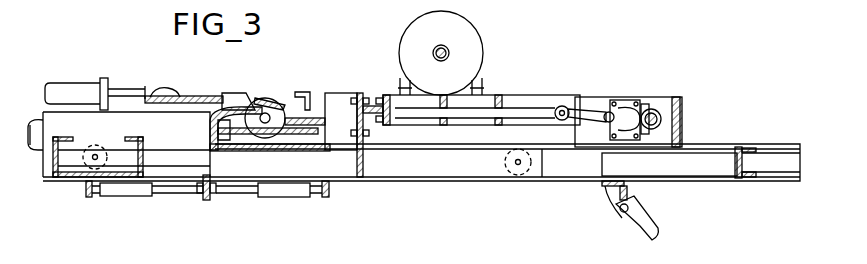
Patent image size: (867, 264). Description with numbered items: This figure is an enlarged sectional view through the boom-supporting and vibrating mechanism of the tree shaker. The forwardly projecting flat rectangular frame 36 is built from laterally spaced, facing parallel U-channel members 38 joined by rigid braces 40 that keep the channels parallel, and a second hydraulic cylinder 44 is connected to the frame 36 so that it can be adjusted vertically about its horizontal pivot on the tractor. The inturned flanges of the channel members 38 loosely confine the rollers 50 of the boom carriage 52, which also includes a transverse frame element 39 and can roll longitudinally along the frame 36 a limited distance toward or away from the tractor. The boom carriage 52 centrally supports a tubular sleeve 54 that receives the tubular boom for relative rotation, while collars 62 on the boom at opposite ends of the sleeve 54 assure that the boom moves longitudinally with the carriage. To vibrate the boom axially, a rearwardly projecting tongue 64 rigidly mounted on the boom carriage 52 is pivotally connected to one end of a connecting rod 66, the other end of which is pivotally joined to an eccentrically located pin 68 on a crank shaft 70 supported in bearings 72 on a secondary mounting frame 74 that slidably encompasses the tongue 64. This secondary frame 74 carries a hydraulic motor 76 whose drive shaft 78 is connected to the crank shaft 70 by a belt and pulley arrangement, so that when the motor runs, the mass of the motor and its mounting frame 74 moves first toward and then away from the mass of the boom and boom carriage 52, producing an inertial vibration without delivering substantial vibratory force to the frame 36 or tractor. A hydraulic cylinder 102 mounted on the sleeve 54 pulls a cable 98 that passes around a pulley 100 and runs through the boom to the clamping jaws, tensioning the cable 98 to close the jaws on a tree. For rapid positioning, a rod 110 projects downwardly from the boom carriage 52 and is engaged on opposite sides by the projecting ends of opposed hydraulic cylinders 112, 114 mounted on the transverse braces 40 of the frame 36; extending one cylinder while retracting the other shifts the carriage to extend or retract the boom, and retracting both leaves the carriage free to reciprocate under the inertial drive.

The frame 36 is at (468, 181).
The U-channel members 38 is at (770, 150).
The transverse frame element 39 is at (208, 153).
The rigid braces 40 is at (89, 197).
The second hydraulic cylinder 44 is at (641, 226).
The rollers 50 is at (108, 190).
The boom carriage 52 is at (64, 186).
The tubular sleeve 54 is at (180, 118).
The collars 62 is at (230, 146).
The tongue 64 is at (468, 118).
The connecting rod 66 is at (593, 116).
The eccentrically located pin 68 is at (648, 110).
The crank shaft 70 is at (628, 112).
The bearings 72 is at (611, 110).
The secondary mounting frame 74 is at (668, 102).
The hydraulic motor 76 is at (420, 30).
The drive shaft 78 is at (447, 50).
The cable 98 is at (205, 98).
The pulley 100 is at (272, 106).
The hydraulic cylinder 102 is at (63, 86).
The rod 110 is at (206, 198).
The hydraulic cylinder 112 is at (150, 192).
The hydraulic cylinder 114 is at (280, 197).